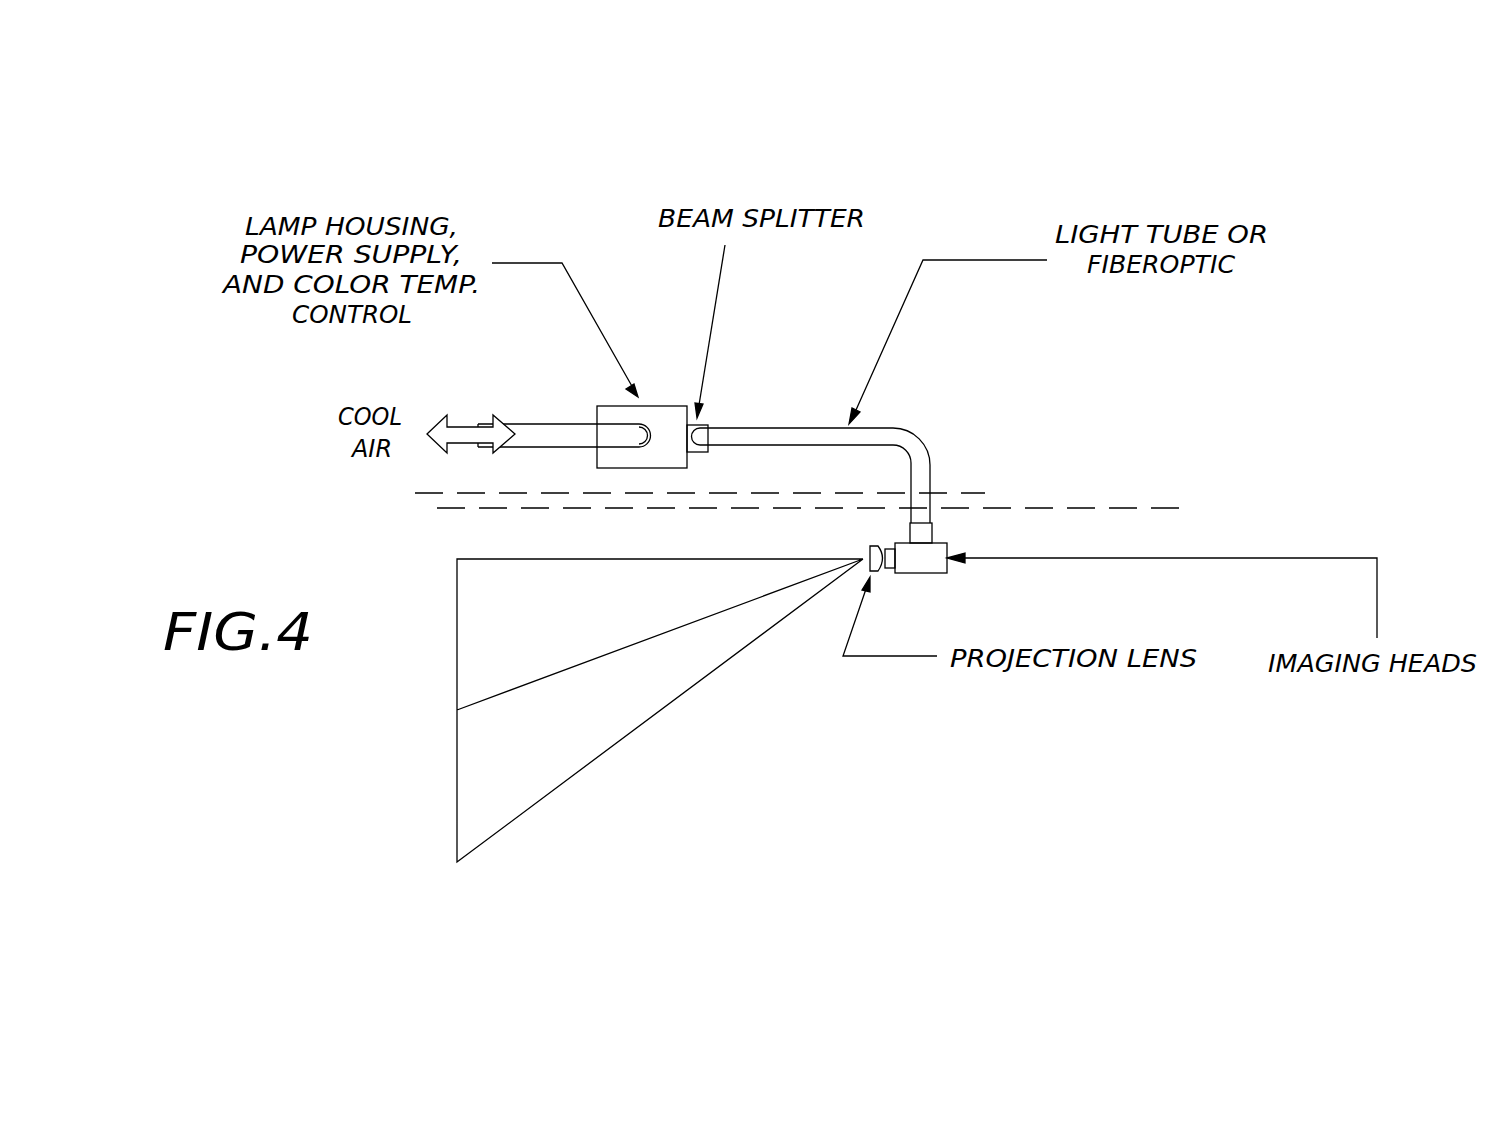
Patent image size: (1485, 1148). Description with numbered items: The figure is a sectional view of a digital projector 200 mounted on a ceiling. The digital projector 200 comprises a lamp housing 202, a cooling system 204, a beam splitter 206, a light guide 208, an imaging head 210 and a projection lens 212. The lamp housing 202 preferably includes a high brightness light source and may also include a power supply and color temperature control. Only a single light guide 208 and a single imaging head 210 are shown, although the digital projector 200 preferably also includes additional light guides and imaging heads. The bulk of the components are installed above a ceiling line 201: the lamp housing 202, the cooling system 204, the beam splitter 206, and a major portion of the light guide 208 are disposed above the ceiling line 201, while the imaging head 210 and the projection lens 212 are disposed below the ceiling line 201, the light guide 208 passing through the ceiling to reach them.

The digital projector 200 is at (1433, 771).
The ceiling line 201 is at (1198, 487).
The lamp housing 202 is at (670, 406).
The cooling system 204 is at (543, 424).
The beam splitter 206 is at (704, 425).
The light guide 208 is at (918, 440).
The imaging head 210 is at (930, 573).
The projection lens 212 is at (868, 543).